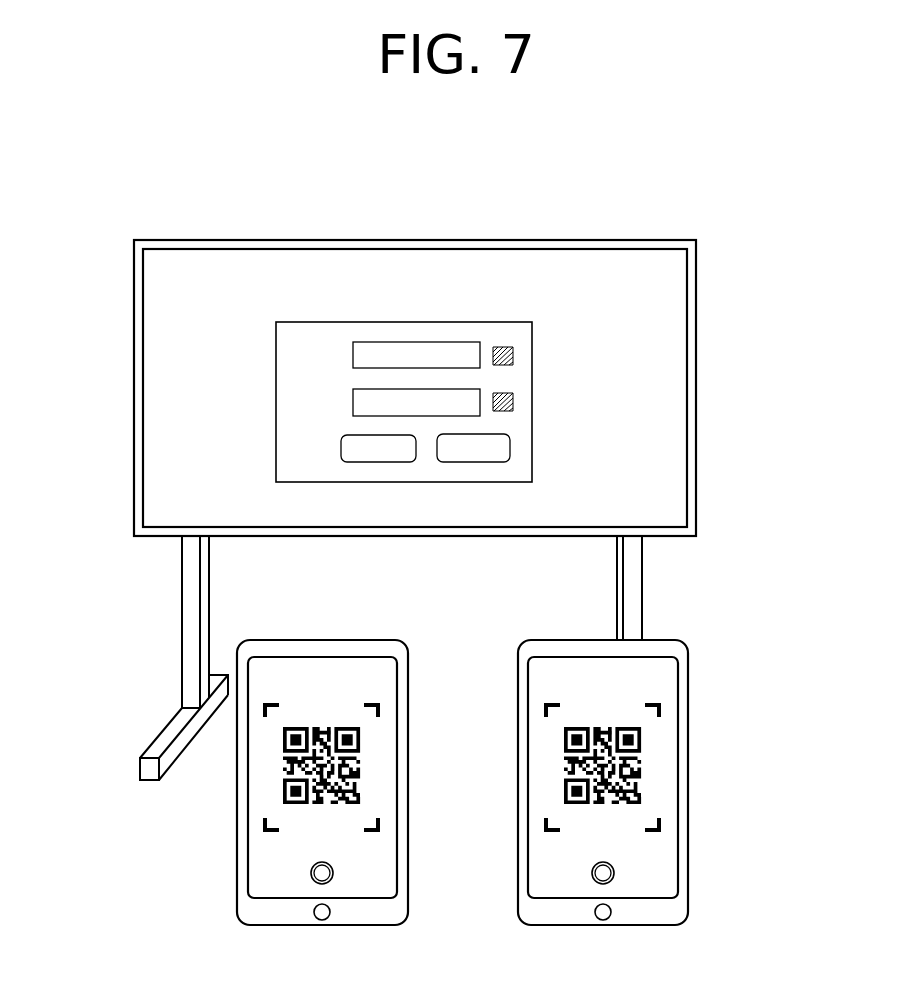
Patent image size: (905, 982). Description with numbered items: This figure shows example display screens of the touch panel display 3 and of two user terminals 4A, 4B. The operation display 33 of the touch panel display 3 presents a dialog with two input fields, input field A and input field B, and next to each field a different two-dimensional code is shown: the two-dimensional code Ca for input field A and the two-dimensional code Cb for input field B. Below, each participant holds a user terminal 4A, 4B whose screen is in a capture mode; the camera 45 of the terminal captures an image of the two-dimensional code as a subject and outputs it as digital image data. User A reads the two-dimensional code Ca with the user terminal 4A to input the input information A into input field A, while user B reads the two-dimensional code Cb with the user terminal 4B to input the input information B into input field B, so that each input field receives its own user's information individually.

The touch panel display 3 is at (656, 198).
The operation display 33 is at (556, 240).
The user terminal 4A is at (408, 691).
The user terminal 4B is at (688, 691).
The camera 45 is at (320, 653).
The two-dimensional code Ca is at (513, 357).
The two-dimensional code Cb is at (513, 403).